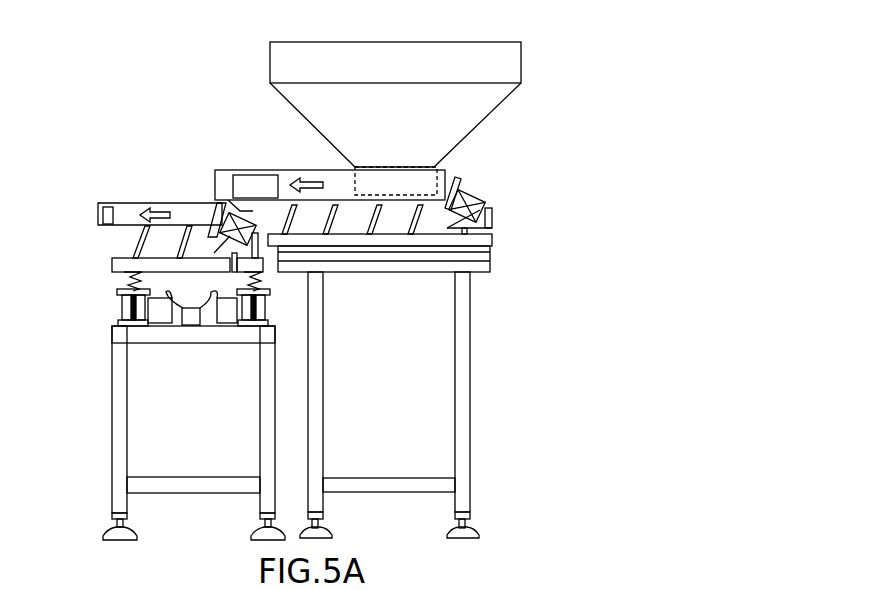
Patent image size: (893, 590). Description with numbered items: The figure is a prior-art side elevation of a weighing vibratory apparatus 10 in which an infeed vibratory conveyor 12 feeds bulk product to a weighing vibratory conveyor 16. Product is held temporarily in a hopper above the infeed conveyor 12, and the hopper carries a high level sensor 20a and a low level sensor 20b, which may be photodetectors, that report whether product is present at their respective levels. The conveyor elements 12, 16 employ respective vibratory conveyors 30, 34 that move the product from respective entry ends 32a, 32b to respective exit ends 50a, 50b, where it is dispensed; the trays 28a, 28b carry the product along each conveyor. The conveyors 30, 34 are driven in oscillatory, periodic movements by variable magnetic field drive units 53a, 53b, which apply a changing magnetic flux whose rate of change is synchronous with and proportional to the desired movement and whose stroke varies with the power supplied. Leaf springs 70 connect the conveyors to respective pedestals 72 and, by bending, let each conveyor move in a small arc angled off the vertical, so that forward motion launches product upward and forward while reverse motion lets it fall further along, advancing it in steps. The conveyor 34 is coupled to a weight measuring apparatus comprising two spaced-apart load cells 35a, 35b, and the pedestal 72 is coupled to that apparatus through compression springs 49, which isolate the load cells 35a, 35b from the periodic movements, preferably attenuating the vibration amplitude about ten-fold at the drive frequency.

The weighing vibratory apparatus 10 is at (421, 90).
The infeed vibratory conveyor 12 is at (360, 338).
The weighing vibratory conveyor 16 is at (186, 333).
The high level sensor 20a is at (388, 69).
The low level sensor 20b is at (399, 142).
The first conveyor tray 28a is at (426, 246).
The second conveyor tray 28b is at (108, 238).
The vibratory conveyor 30 is at (333, 196).
The entry end 32a is at (417, 182).
The entry end 32b is at (205, 197).
The vibratory conveyor 34 is at (125, 226).
The load cell 35a is at (118, 321).
The load cell 35b is at (246, 327).
The compression springs 49 is at (131, 282).
The exit end 50a is at (327, 174).
The exit end 50b is at (132, 204).
The variable magnetic field drive unit 53a is at (482, 200).
The variable magnetic field drive unit 53b is at (250, 222).
The leaf springs 70 is at (377, 214).
The pedestal 72 is at (258, 264).